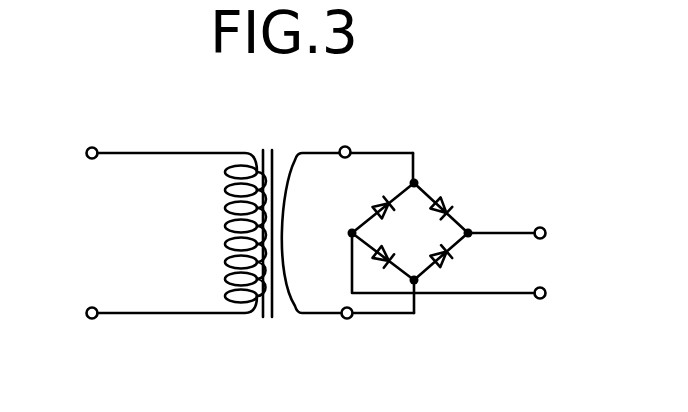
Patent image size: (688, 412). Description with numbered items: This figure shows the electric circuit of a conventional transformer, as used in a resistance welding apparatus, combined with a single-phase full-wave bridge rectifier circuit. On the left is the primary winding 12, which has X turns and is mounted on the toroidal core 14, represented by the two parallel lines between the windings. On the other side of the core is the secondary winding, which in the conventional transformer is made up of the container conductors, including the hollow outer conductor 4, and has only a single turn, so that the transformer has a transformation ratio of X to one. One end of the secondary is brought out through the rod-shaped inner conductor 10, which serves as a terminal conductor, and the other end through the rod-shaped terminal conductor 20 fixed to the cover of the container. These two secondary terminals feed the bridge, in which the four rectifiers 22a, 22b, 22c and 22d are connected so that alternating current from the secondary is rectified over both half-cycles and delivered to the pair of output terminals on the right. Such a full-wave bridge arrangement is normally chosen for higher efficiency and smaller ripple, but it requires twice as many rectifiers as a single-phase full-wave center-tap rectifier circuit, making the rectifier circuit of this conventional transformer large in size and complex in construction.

The outer conductor 4 is at (287, 184).
The inner conductor 10 is at (351, 148).
The primary winding 12 is at (223, 256).
The toroidal core 14 is at (274, 317).
The terminal conductor 20 is at (351, 319).
The rectifier 22a is at (449, 202).
The rectifier 22b is at (454, 259).
The rectifier 22c is at (388, 259).
The rectifier 22d is at (379, 206).